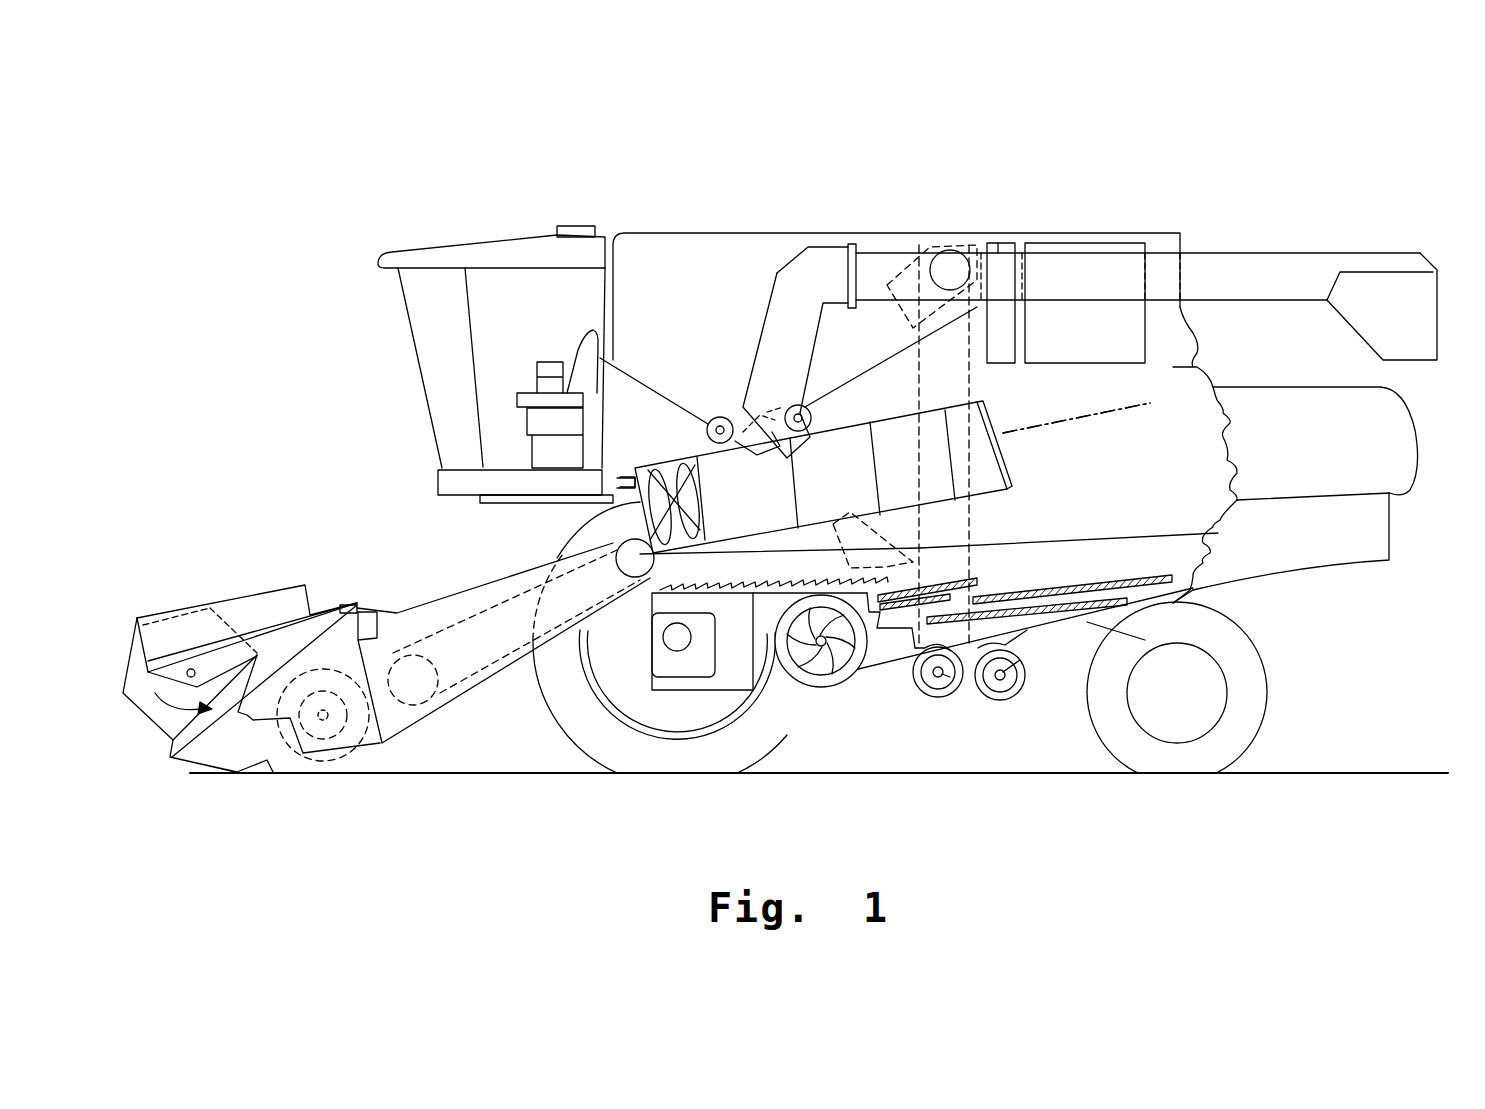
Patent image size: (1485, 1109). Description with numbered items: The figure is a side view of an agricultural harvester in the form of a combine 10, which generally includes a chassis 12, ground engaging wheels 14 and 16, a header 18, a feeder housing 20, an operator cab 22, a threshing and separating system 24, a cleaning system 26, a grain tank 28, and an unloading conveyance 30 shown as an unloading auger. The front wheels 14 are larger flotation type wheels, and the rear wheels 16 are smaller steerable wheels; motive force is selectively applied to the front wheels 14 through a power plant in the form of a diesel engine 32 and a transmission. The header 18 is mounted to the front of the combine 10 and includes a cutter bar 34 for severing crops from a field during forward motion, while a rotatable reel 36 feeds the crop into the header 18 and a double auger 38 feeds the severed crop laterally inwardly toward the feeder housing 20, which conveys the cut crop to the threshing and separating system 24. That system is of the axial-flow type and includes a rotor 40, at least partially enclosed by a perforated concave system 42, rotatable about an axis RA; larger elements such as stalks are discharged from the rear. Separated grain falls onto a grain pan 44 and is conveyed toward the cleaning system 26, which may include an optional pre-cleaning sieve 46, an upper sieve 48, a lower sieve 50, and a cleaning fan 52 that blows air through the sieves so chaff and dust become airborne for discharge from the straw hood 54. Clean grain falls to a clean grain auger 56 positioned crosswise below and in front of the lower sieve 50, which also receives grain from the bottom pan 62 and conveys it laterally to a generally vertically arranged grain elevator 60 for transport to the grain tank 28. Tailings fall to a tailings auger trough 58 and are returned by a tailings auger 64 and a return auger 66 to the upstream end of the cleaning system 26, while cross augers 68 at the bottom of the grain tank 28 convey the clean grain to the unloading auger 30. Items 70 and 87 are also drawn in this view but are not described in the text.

The combine 10 is at (482, 212).
The chassis 12 is at (1197, 600).
The front wheels 14 is at (573, 727).
The rear wheels 16 is at (1262, 708).
The header 18 is at (225, 568).
The feeder housing 20 is at (458, 588).
The operator cab 22 is at (410, 342).
The threshing and separating system 24 is at (553, 526).
The cleaning system 26 is at (891, 706).
The grain tank 28 is at (667, 237).
The unloading conveyance 30 is at (1279, 263).
The diesel engine 32 is at (1072, 245).
The cutter bar 34 is at (250, 772).
The rotatable reel 36 is at (135, 663).
The double auger 38 is at (327, 740).
The rotor 40 is at (663, 473).
The concave system 42 is at (863, 448).
The grain pan 44 is at (648, 613).
The pre-cleaning sieve 46 is at (978, 581).
The upper sieve 48 is at (1073, 580).
The lower sieve 50 is at (1053, 612).
The cleaning fan 52 is at (812, 683).
The straw hood 54 is at (1400, 432).
The clean grain auger 56 is at (947, 690).
The tailings auger trough 58 is at (1103, 618).
The grain elevator 60 is at (973, 373).
The bottom pan 62 is at (1087, 622).
The tailings auger 64 is at (1000, 697).
The return auger 66 is at (906, 560).
The cross augers 68 is at (718, 416).
The grain sensor 70 is at (998, 226).
The antenna/receiver 87 is at (577, 227).
The axis RA is at (1067, 420).